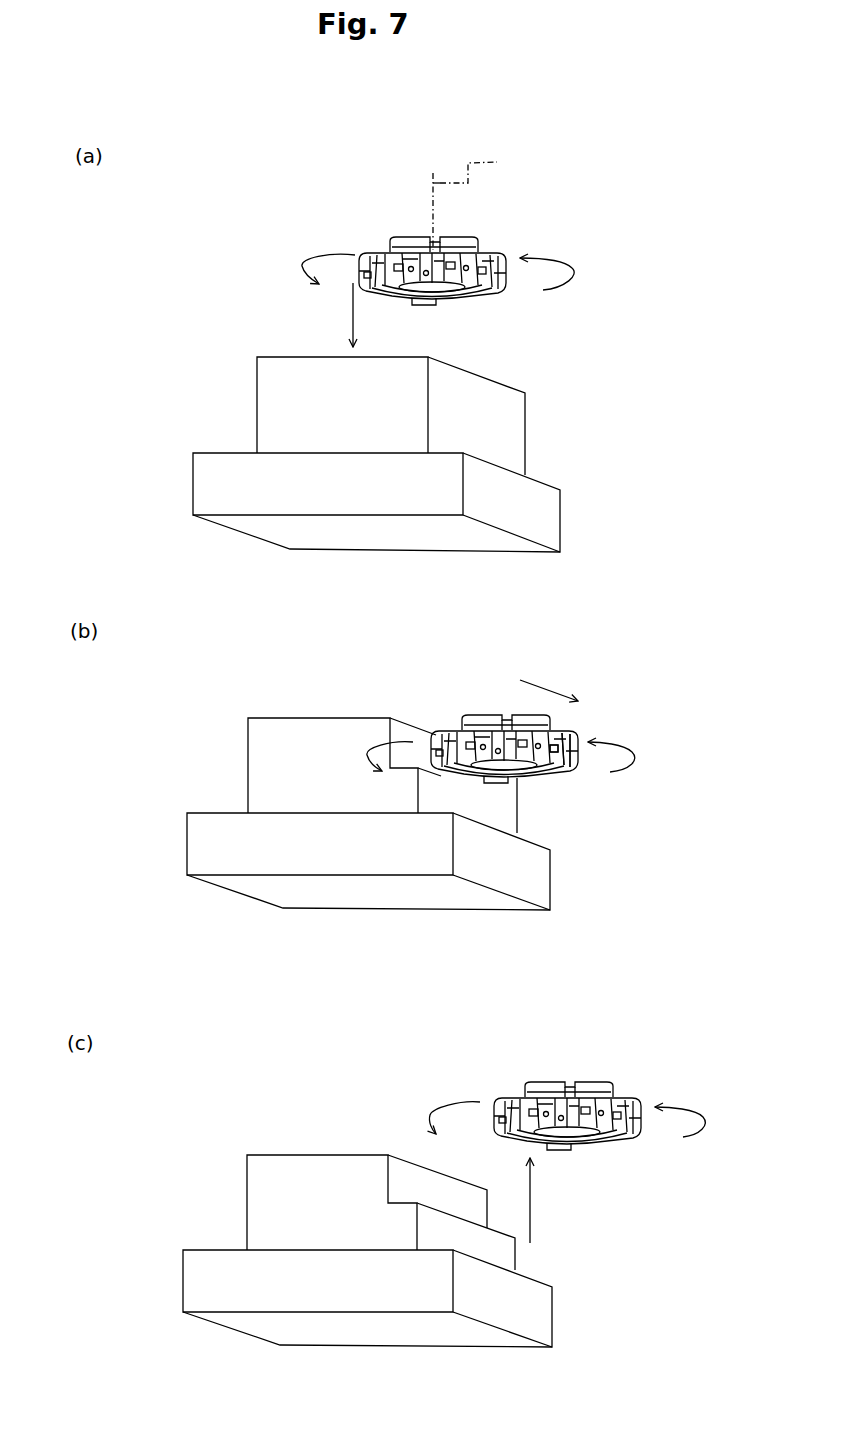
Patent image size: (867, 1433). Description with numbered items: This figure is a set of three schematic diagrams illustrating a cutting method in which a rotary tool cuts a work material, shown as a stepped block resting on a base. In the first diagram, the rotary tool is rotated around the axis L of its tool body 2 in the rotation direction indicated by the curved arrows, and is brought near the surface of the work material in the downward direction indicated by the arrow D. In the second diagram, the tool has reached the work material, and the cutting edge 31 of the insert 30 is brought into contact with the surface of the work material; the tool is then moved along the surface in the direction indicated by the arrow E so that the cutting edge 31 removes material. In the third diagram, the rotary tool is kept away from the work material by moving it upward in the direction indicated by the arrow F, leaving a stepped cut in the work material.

The tool body 2 is at (430, 204).
The insert 30 is at (599, 794).
The cutting edge 31 is at (560, 750).
The axis L is at (473, 200).
The arrow indicating approach direction D is at (353, 320).
The arrow indicating cutting feed direction E is at (549, 683).
The arrow indicating retraction direction F is at (530, 1207).